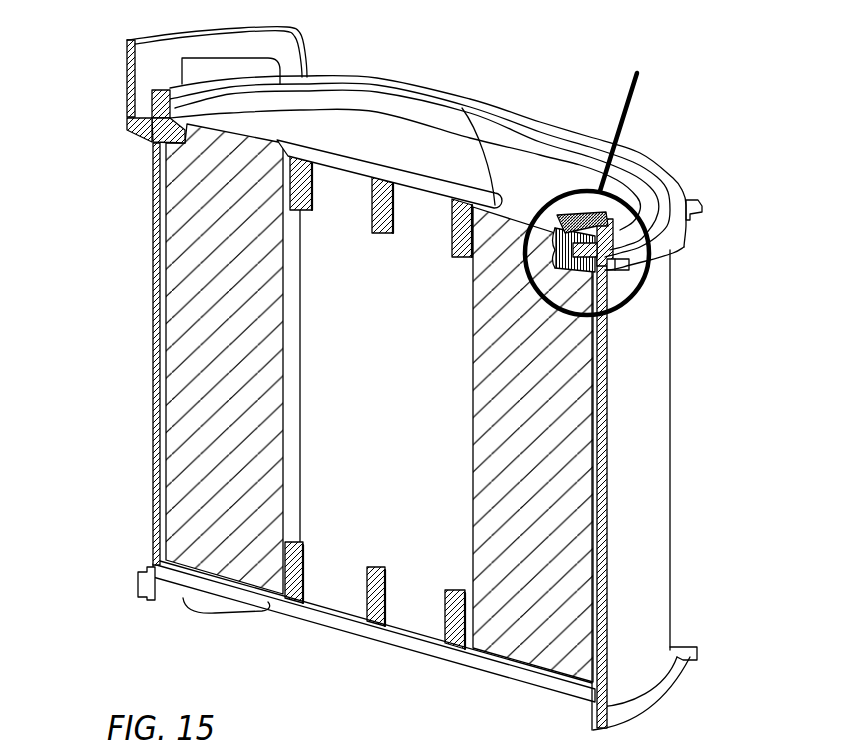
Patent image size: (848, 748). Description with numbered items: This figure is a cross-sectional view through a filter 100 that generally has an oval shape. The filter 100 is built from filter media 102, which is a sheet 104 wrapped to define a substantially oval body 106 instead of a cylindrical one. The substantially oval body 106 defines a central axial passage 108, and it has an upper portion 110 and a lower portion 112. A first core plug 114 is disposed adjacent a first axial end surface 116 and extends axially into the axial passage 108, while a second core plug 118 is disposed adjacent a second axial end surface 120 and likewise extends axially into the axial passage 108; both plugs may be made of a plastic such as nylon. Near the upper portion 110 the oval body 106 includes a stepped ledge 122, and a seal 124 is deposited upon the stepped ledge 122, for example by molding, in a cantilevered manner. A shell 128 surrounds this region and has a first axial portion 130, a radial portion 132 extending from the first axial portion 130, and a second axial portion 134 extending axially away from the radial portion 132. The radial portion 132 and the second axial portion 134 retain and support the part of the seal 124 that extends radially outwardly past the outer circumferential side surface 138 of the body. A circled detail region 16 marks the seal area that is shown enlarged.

The filter 100 is at (744, 95).
The filter media 102 is at (180, 393).
The sheet 104 is at (583, 282).
The substantially oval body 106 is at (163, 300).
The axial passage 108 is at (337, 452).
The upper portion 110 is at (132, 163).
The lower portion 112 is at (615, 690).
The first core plug 114 is at (418, 180).
The first axial end surface 116 is at (467, 157).
The second core plug 118 is at (333, 616).
The second axial end surface 120 is at (522, 672).
The stepped ledge 122 is at (182, 152).
The seal 124 is at (152, 107).
The shell 128 is at (640, 493).
The first axial portion 130 is at (598, 523).
The radial portion 132 is at (128, 133).
The second axial portion 134 is at (127, 50).
The outer circumferential side surface 138 is at (592, 365).
The detail view circle (FIG. 16) 16 is at (594, 174).